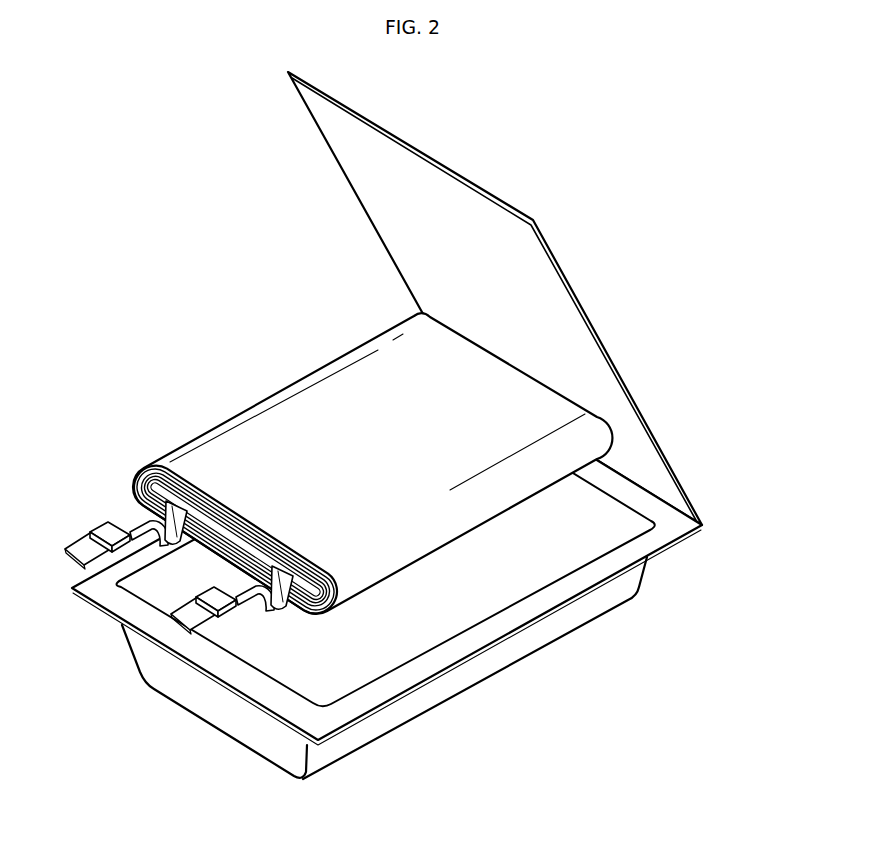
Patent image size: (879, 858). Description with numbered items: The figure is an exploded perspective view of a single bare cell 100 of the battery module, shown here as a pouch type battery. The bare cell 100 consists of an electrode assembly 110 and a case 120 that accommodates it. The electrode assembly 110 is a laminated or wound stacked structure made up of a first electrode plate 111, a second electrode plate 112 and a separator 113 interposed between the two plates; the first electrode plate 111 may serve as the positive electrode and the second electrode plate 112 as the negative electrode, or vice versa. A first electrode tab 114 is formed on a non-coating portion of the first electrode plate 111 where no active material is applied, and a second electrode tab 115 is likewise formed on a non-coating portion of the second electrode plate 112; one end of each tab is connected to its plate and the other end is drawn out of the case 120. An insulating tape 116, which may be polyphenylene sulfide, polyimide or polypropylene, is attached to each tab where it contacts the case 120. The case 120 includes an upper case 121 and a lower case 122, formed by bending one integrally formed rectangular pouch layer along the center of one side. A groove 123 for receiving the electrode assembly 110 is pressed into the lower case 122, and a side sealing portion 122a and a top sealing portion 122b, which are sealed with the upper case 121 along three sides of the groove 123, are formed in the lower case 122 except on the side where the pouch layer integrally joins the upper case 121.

The bare cell 100 is at (152, 240).
The electrode assembly 110 is at (307, 552).
The first electrode plate 111 is at (140, 466).
The second electrode plate 112 is at (132, 493).
The separator 113 is at (135, 477).
The first electrode tab 114 is at (95, 578).
The second electrode tab 115 is at (285, 612).
The insulating tape 116 is at (110, 525).
The case 120 is at (450, 431).
The upper case 121 is at (670, 500).
The lower case 122 is at (421, 582).
The side sealing portion 122a is at (572, 587).
The top sealing portion 122b is at (220, 673).
The groove 123 is at (433, 622).